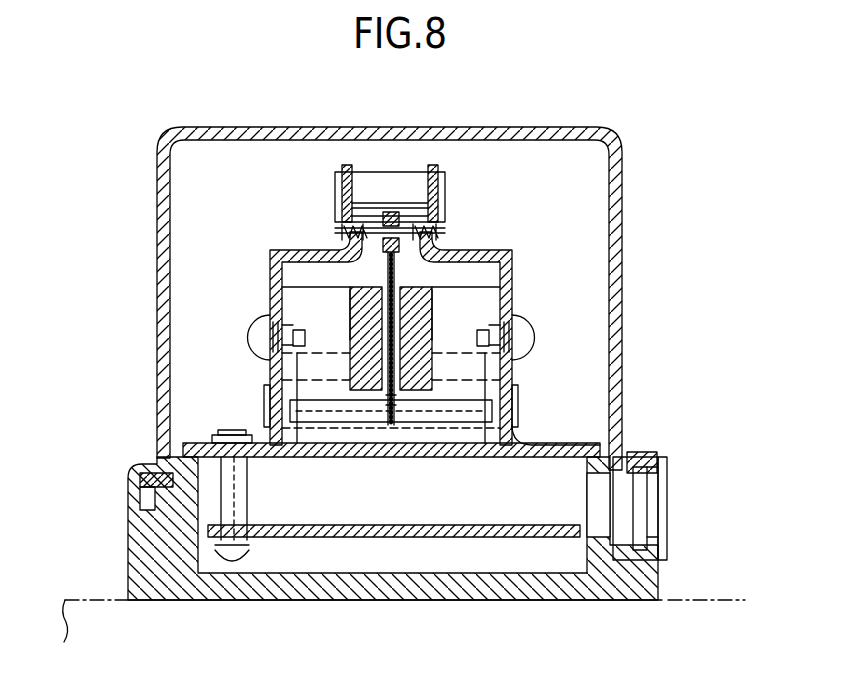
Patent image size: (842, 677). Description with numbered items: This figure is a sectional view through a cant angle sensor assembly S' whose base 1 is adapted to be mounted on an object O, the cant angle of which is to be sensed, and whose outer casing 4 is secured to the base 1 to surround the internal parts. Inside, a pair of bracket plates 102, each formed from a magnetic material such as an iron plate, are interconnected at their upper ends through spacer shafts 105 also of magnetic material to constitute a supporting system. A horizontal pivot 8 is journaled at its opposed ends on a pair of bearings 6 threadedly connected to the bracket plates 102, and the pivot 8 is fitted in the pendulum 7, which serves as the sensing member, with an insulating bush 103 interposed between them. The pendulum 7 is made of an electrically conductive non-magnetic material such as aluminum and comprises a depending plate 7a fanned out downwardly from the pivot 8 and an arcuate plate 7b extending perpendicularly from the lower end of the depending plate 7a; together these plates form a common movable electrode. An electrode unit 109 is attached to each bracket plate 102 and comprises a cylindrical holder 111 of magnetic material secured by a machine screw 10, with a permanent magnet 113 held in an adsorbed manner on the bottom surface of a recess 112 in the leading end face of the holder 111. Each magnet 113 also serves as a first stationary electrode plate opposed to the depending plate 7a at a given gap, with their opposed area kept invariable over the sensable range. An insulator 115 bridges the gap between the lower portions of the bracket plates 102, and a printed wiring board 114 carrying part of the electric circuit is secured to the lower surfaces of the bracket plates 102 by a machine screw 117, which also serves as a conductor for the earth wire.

The base 1 is at (366, 604).
The outer casing 4 is at (622, 261).
The sensor S' is at (639, 108).
The object O is at (75, 600).
The bearings 6 is at (457, 235).
The pendulum 7 is at (315, 425).
The depending plate 7a is at (415, 303).
The arcuate plate 7b is at (437, 425).
The horizontal pivot 8 is at (373, 228).
The machine screw 10 is at (543, 340).
The bracket plates 102 is at (491, 251).
The insulating bush 103 is at (409, 230).
The spacer shafts 105 is at (384, 180).
The electrode unit 109 is at (497, 373).
The cylindrical holder 111 is at (325, 314).
The recess 112 is at (408, 290).
The permanent magnet 113 is at (432, 333).
The printed wiring board 114 is at (495, 530).
The insulator 115 is at (365, 455).
The machine screw 117 is at (246, 555).